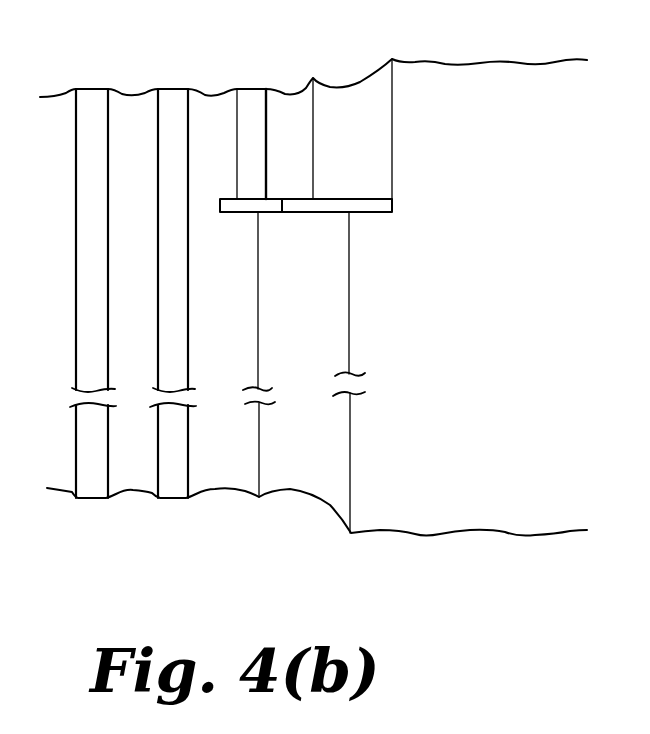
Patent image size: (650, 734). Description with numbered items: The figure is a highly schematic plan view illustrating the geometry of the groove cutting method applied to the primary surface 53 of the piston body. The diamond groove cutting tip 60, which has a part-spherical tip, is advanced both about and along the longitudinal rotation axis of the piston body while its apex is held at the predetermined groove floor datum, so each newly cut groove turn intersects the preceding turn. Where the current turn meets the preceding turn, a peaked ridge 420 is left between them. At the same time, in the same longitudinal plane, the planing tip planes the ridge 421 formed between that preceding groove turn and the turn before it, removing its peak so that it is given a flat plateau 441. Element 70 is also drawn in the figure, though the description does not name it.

The primary surface 53 is at (488, 61).
The diamond groove cutting tip 60 is at (353, 195).
The contact portion 70 is at (274, 203).
The flat plateau 441 is at (175, 485).
The ridge 421 is at (197, 492).
The peaked ridge 420 is at (267, 492).